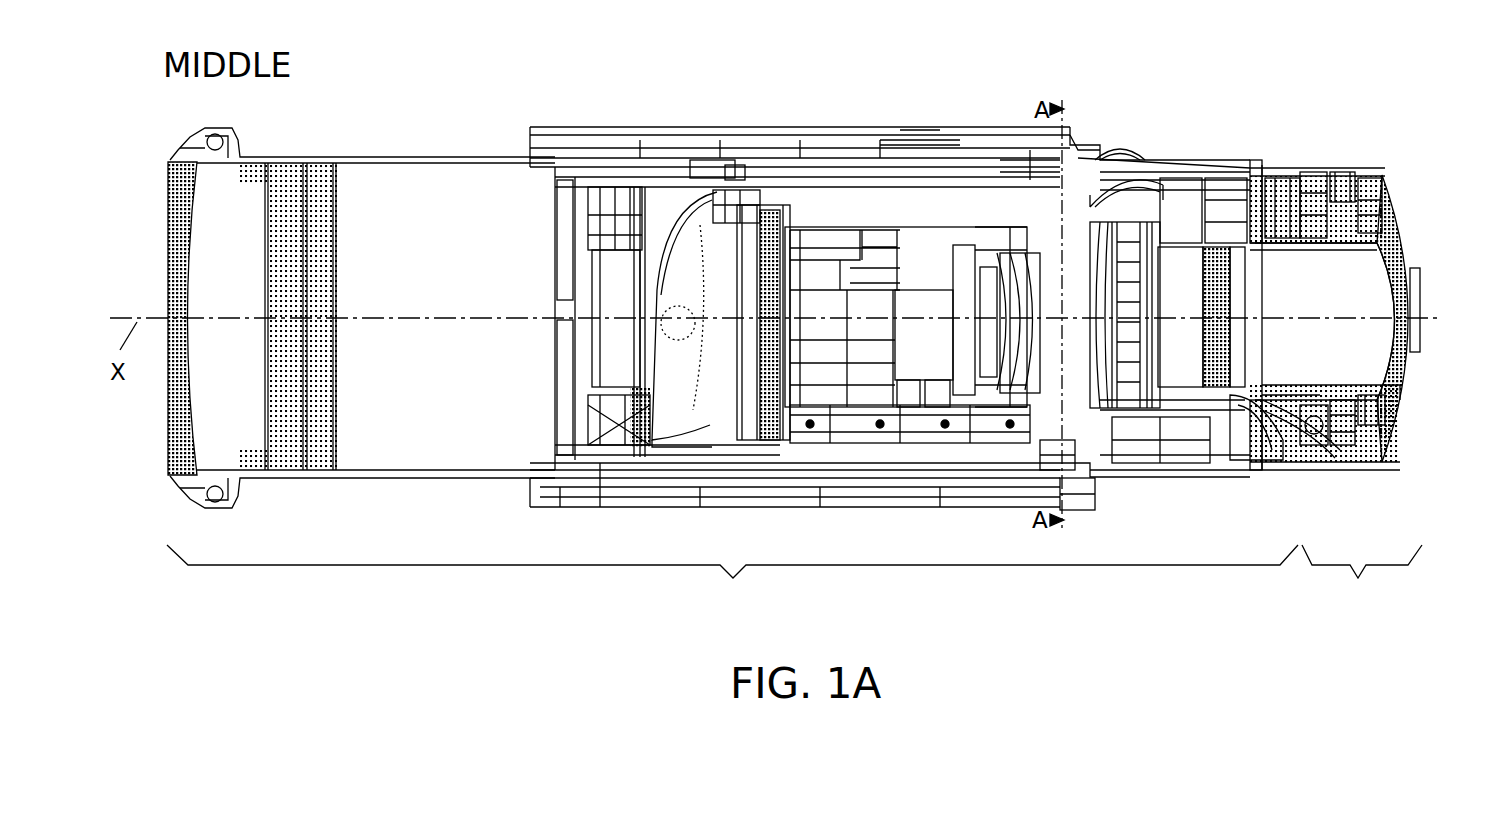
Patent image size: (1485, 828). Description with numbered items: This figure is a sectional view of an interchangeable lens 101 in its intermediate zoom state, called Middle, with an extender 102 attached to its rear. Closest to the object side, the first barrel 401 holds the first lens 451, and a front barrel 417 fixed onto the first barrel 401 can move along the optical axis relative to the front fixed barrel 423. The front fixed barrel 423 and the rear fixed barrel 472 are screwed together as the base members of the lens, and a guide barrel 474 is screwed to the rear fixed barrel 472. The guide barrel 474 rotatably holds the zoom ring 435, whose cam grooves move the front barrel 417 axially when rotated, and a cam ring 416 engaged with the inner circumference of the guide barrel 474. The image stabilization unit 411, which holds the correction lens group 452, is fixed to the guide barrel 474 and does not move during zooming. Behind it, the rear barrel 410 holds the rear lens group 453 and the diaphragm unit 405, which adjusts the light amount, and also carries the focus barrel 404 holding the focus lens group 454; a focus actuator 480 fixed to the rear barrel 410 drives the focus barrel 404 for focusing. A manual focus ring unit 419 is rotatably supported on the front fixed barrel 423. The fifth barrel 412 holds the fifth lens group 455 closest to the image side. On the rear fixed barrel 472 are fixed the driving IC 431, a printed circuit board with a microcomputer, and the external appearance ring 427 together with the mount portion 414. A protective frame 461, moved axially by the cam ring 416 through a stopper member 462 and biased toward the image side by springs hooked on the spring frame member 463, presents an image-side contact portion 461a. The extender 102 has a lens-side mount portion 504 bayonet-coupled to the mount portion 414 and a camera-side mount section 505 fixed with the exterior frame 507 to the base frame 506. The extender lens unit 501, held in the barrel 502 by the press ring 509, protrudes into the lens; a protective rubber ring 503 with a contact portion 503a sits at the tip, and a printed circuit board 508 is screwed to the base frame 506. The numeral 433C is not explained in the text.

The interchangeable lens 101 is at (732, 581).
The extender 102 is at (1362, 573).
The first barrel 401 is at (200, 160).
The focus barrel 404 is at (1035, 175).
The diaphragm unit 405 is at (781, 213).
The rear barrel 410 is at (820, 213).
The image stabilization unit 411 is at (608, 243).
The fifth barrel 412 is at (1190, 237).
The mount portion 414 is at (1295, 192).
The cam ring 416 is at (747, 177).
The front barrel 417 is at (265, 162).
The manual focus ring unit 419 is at (993, 255).
The front fixed barrel 423 is at (897, 130).
The external appearance ring 427 is at (1258, 165).
The driving IC 431 is at (1262, 420).
The connector 433C is at (1057, 457).
The zoom ring 435 is at (717, 172).
The first lens 451 is at (205, 238).
The correction lens group 452 is at (625, 262).
The rear lens group 453 is at (1092, 303).
The focus lens group 454 is at (985, 285).
The fifth lens group 455 is at (1173, 267).
The protective frame 461 is at (1130, 437).
The contact portion 461a is at (1235, 385).
The stopper member 462 is at (1077, 500).
The spring frame member 463 is at (1128, 198).
The rear fixed barrel 472 is at (1110, 140).
The guide barrel 474 is at (733, 173).
The focus actuator 480 is at (915, 433).
The extender lens unit 501 is at (1340, 283).
The barrel 502 is at (1340, 237).
The protective rubber ring 503 is at (1330, 440).
The contact portion 503a is at (1305, 430).
The lens-side mount portion 504 is at (1310, 180).
The camera-side mount section 505 is at (1375, 180).
The base frame 506 is at (1357, 192).
The exterior frame 507 is at (1340, 180).
The printed circuit board 508 is at (1262, 392).
The press ring 509 is at (1300, 425).